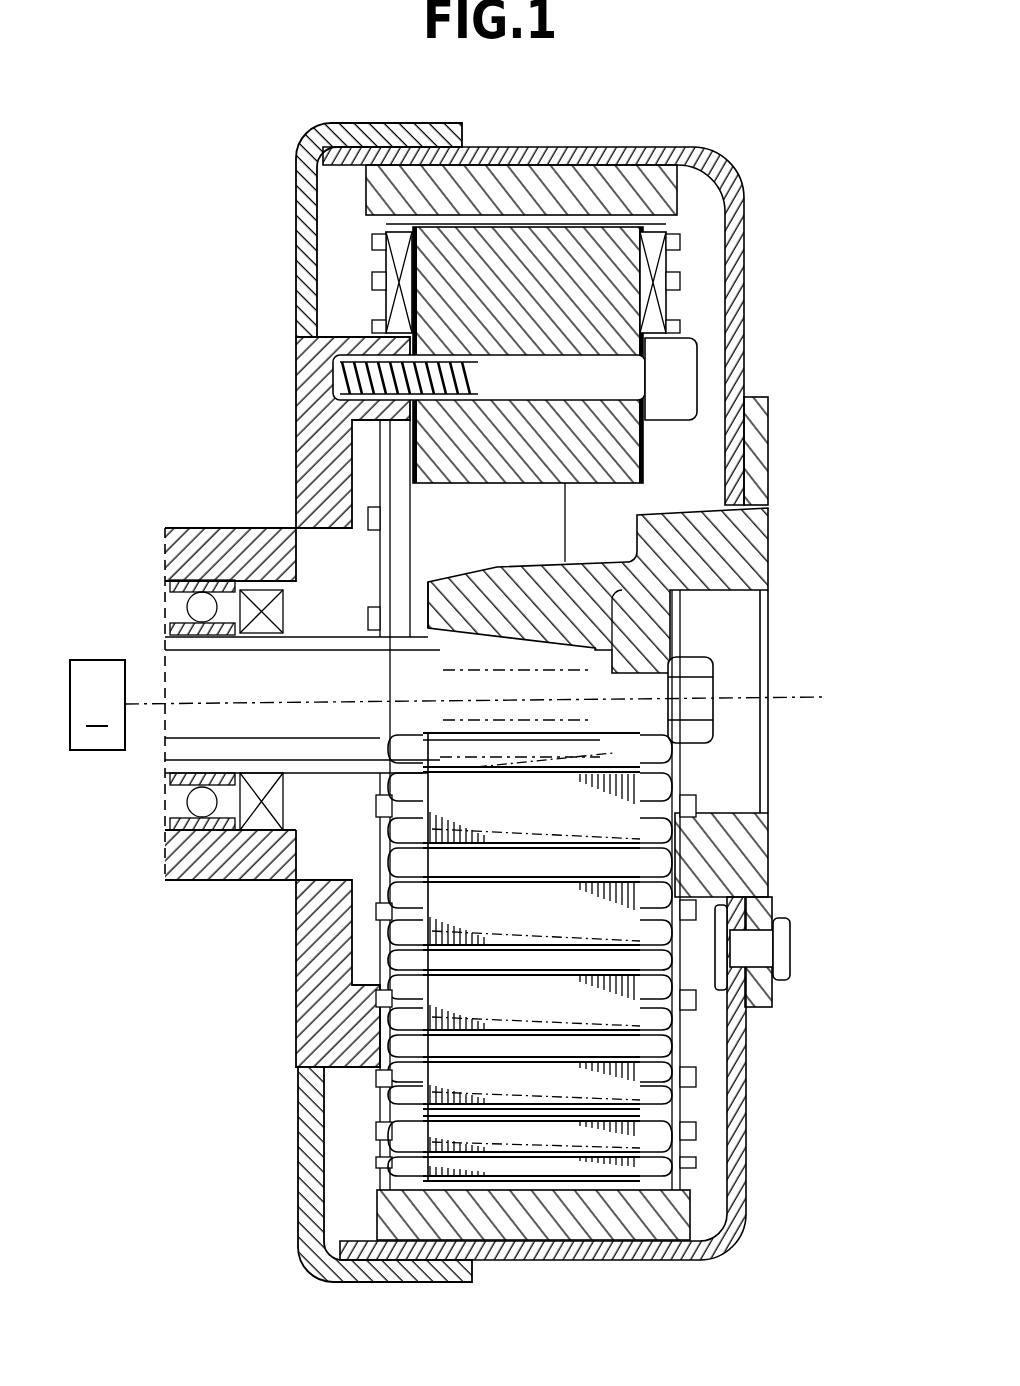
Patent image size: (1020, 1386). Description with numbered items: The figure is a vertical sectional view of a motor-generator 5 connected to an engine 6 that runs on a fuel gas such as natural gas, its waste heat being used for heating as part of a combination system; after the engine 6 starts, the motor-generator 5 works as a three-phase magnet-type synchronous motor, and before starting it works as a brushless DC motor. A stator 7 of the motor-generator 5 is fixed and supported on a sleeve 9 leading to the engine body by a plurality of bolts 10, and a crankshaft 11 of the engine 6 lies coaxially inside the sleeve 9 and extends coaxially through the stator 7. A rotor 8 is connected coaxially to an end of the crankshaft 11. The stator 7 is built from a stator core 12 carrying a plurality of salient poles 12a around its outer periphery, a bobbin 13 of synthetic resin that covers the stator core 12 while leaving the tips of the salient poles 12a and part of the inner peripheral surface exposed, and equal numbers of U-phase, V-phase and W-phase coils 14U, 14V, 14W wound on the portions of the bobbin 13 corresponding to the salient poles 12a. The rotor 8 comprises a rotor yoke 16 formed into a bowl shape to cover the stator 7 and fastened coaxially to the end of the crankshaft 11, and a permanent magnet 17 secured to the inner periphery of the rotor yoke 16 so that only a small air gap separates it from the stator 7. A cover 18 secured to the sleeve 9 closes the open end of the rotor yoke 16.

The motor-generator 5 is at (553, 149).
The engine 6 is at (97, 705).
The stator 7 is at (449, 363).
The rotor 8 is at (752, 1062).
The sleeve 9 is at (212, 578).
The bolt 10 is at (682, 378).
The crankshaft 11 is at (277, 748).
The stator core 12 is at (511, 462).
The salient pole 12a is at (490, 246).
The bobbin 13 is at (368, 288).
The U-phase coil 14U is at (658, 258).
The V-phase coil 14V is at (437, 1020).
The W-phase coil 14W is at (437, 1097).
The rotor yoke 16 is at (746, 436).
The permanent magnet 17 is at (678, 188).
The cover 18 is at (295, 220).